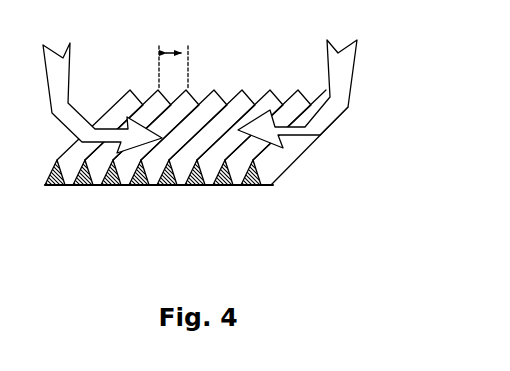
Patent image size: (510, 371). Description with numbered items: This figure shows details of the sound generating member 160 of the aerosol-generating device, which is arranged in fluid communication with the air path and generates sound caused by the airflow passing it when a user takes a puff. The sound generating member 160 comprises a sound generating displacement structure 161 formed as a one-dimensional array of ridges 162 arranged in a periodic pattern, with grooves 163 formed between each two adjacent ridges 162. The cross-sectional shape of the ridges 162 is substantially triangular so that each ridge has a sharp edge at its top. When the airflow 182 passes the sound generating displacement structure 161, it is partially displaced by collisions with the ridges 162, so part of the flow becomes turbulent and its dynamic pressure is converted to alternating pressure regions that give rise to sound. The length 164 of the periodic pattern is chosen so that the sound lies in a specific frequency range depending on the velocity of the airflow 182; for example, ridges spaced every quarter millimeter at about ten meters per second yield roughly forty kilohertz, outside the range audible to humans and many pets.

The sound generating member 160 is at (211, 148).
The sound generating displacement structure 161 is at (211, 148).
The ridges 162 is at (141, 176).
The grooves 163 is at (229, 88).
The length of the periodic pattern 164 is at (177, 58).
The airflow 182 is at (63, 62).